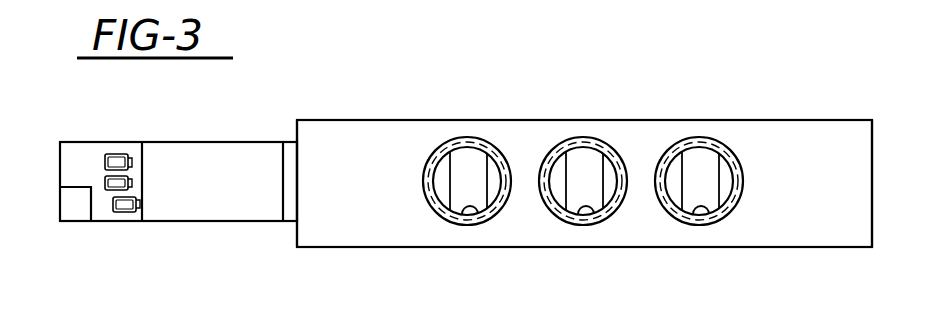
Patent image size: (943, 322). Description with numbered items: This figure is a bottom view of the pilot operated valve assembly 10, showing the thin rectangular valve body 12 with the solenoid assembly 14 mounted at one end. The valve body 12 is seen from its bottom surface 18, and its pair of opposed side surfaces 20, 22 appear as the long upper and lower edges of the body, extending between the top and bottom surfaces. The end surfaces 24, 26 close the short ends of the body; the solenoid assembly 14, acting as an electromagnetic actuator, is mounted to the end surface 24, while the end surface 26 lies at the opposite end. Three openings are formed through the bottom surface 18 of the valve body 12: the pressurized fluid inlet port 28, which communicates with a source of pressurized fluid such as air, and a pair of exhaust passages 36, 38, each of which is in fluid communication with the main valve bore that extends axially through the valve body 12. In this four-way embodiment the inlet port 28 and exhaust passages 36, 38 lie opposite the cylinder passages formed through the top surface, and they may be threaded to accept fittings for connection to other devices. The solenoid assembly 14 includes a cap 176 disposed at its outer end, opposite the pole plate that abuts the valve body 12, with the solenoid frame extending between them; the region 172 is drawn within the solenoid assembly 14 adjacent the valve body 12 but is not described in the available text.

The pilot operated valve assembly 10 is at (668, 82).
The valve body 12 is at (355, 118).
The solenoid assembly 14 is at (190, 142).
The bottom surface 18 is at (792, 223).
The side surface 20 is at (480, 119).
The side surface 22 is at (380, 248).
The end surface 24 is at (296, 236).
The end surface 26 is at (872, 146).
The pressurized fluid inlet port 28 is at (588, 214).
The exhaust passage 36 is at (480, 214).
The exhaust passage 38 is at (710, 214).
The module body 172 is at (197, 198).
The cap 176 is at (87, 158).